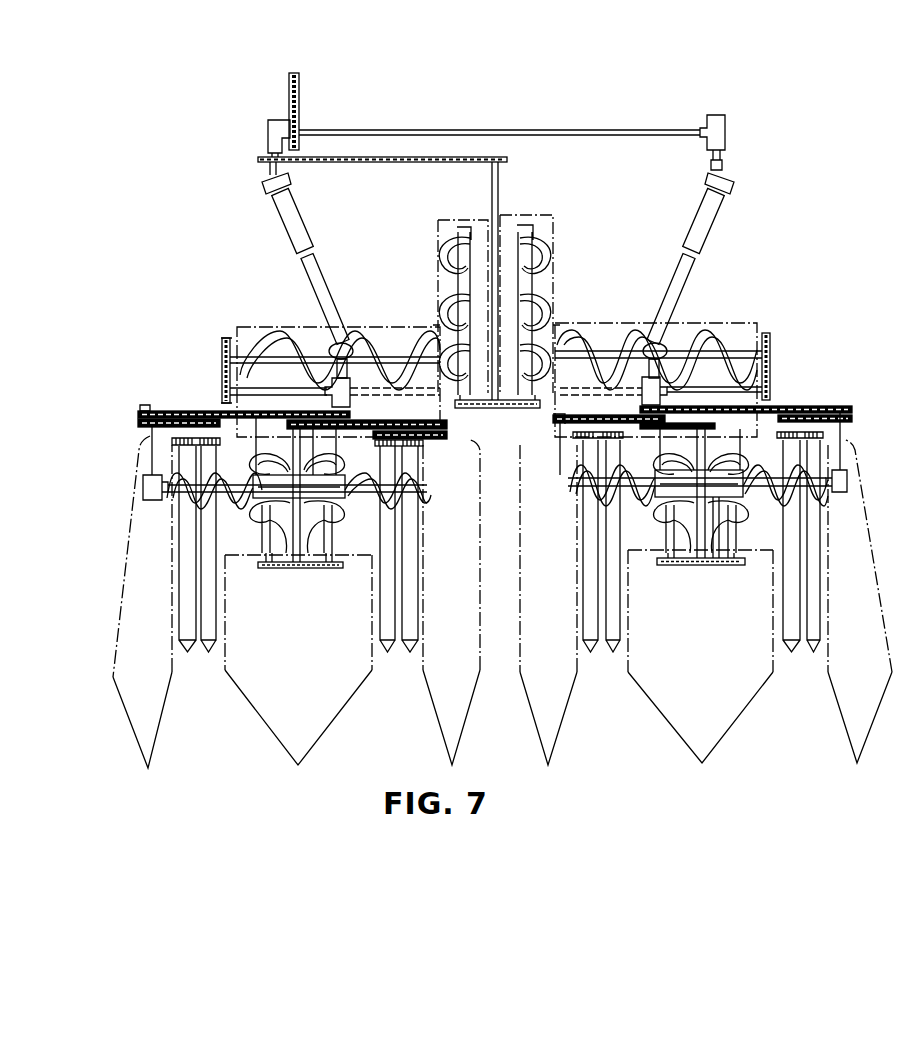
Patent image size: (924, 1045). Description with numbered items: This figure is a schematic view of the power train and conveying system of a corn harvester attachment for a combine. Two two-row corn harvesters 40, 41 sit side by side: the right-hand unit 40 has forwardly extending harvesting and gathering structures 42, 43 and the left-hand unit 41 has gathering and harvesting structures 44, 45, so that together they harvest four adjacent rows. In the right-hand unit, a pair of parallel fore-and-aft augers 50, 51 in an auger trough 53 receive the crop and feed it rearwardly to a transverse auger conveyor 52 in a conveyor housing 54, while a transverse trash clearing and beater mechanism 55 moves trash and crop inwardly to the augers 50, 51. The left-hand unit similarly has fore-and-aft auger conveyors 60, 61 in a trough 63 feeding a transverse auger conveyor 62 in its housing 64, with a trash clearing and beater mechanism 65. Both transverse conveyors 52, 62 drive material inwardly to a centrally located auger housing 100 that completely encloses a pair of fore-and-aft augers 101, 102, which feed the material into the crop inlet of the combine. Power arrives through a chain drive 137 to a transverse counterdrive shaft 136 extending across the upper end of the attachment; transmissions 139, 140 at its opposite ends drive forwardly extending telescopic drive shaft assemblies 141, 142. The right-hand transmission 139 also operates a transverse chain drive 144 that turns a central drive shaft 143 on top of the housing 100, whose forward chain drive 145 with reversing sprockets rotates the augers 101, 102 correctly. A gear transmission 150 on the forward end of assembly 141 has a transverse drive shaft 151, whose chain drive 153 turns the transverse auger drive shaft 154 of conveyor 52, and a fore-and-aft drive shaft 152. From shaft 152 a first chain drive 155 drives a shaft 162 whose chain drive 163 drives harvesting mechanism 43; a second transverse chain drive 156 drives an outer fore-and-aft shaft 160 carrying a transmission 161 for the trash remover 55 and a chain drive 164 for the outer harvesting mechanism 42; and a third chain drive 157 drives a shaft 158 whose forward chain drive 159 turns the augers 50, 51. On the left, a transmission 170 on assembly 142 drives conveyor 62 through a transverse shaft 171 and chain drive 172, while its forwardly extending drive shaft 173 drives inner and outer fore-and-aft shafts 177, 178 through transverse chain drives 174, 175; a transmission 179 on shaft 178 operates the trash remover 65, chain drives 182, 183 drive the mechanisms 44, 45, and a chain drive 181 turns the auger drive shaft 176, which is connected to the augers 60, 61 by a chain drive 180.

The two-row corn harvester 40 is at (126, 551).
The two-row corn harvester 41 is at (866, 491).
The harvesting and gathering structure 42 is at (200, 652).
The harvesting and gathering structure 43 is at (400, 652).
The gathering and harvesting structure 44 is at (605, 650).
The gathering and harvesting structure 45 is at (804, 650).
The fore-and-aft extending auger 50 is at (280, 548).
The fore-and-aft extending auger 51 is at (304, 550).
The transverse auger conveyor 52 is at (276, 330).
The auger trough 53 is at (345, 550).
The conveyor housing 54 is at (384, 327).
The trash clearing and beater mechanism 55 is at (222, 494).
The fore-and-aft extending auger conveyor 60 is at (680, 534).
The fore-and-aft extending auger conveyor 61 is at (718, 538).
The transverse auger conveyor 62 is at (730, 322).
The auger trough 63 is at (708, 550).
The conveyor housing 64 is at (680, 330).
The trash clearing and beater mechanism 65 is at (754, 496).
The auger housing 100 is at (548, 228).
The fore-and-aft extending auger 101 is at (463, 230).
The fore-and-aft extending auger 102 is at (545, 251).
The transverse counterdrive shaft 136 is at (380, 131).
The chain drive 137 is at (302, 88).
The transmission 139 is at (268, 128).
The transmission 140 is at (725, 124).
The telescopic drive shaft assembly 141 is at (287, 223).
The telescopic drive shaft assembly 142 is at (705, 224).
The central fore-and-aft extending drive shaft 143 is at (499, 190).
The transverse chain drive 144 is at (374, 163).
The chain drive 145 is at (505, 409).
The gear transmission 150 is at (351, 397).
The transverse drive shaft 151 is at (282, 388).
The fore-and-aft extending drive shaft 152 is at (410, 389).
The chain drive 153 is at (222, 374).
The transverse auger drive shaft 154 is at (226, 338).
The first chain drive 155 is at (445, 420).
The second transverse chain drive 156 is at (178, 411).
The third chain drive 157 is at (338, 445).
The fore-and-aft extending shaft 158 is at (298, 570).
The chain drive 159 is at (270, 569).
The outer fore-and-aft shaft 160 is at (150, 428).
The transmission 161 is at (143, 488).
The fore-and-aft extending shaft 162 is at (424, 443).
The chain drive 163 is at (448, 434).
The chain drive 164 is at (158, 410).
The transmission 170 is at (649, 379).
The transverse shaft 171 is at (765, 389).
The chain drive 172 is at (772, 350).
The forwardly extending drive shaft 173 is at (642, 397).
The transverse chain drive 174 is at (589, 400).
The transverse chain drive 175 is at (800, 407).
The drive shaft 176 is at (690, 549).
The inner fore-and-aft drive shaft 177 is at (559, 400).
The outer fore-and-aft drive shaft 178 is at (824, 433).
The transmission 179 is at (848, 478).
The chain drive 180 is at (722, 566).
The chain drive 181 is at (602, 437).
The chain drive 182 is at (572, 431).
The chain drive 183 is at (852, 416).